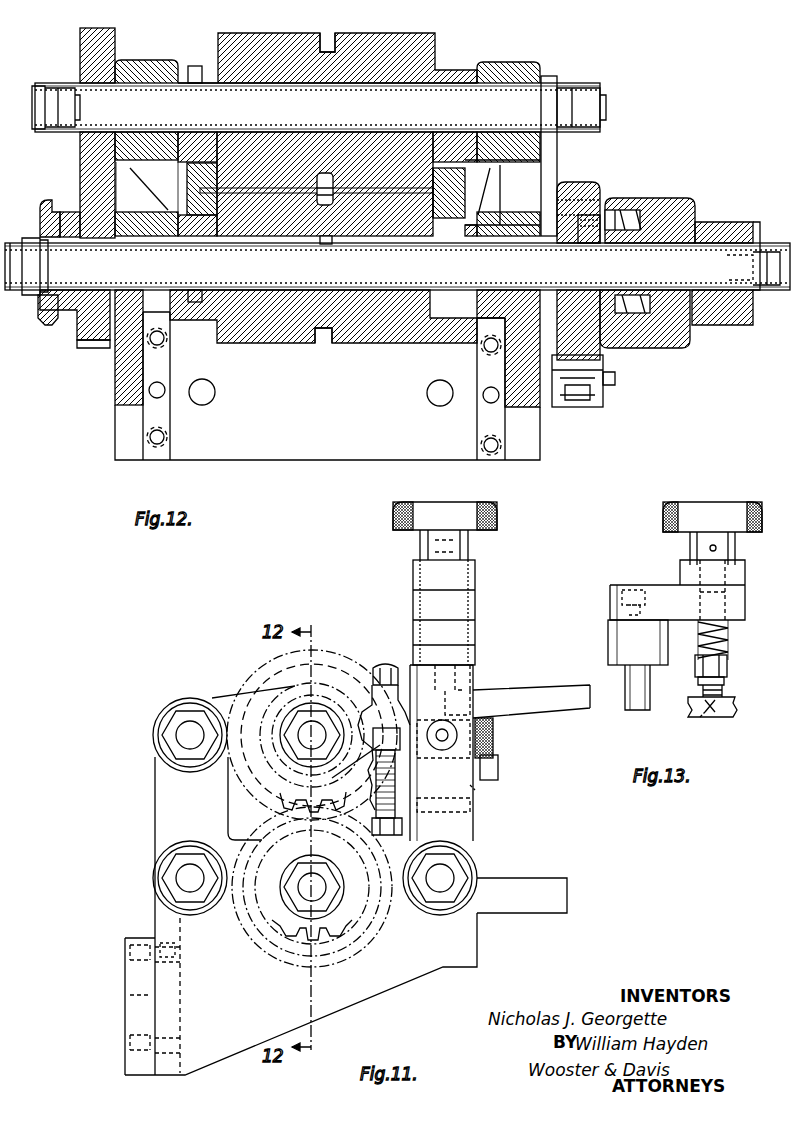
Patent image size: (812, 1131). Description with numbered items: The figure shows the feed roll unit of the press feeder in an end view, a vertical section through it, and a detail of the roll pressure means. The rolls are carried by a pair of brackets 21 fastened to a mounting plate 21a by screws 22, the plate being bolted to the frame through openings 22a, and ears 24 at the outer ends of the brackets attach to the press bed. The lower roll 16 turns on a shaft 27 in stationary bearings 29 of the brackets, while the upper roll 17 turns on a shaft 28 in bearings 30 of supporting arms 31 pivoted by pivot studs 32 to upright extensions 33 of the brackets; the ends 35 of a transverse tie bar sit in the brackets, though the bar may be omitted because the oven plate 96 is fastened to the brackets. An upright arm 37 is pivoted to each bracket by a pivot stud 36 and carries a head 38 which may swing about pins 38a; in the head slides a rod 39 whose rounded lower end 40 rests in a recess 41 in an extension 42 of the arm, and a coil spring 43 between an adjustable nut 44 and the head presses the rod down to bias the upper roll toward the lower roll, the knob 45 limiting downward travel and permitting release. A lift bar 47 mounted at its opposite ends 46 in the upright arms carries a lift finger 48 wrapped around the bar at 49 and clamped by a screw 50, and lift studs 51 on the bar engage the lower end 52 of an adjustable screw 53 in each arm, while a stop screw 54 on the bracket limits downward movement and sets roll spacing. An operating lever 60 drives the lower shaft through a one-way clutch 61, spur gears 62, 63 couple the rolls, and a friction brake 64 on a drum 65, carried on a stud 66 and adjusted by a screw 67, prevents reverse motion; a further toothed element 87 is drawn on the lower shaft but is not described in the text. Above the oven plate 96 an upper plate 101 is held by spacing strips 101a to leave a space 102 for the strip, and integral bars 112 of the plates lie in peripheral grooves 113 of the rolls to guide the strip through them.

In FIG. 12, the lower roll 16 is at (366, 335).
In FIG. 12, the upper roll 17 is at (378, 40).
In FIG. 11, the bracket 21 is at (380, 984).
In FIG. 12, the mounting plate 21a is at (330, 455).
In FIG. 11, the mounting plate 21a is at (130, 1008).
In FIG. 12, the screws 22 is at (484, 350).
In FIG. 11, the screws 22 is at (178, 948).
In FIG. 12, the openings 22a is at (214, 397).
In FIG. 11, the ears 24 is at (560, 878).
In FIG. 12, the shaft 27 is at (272, 318).
In FIG. 12, the shaft 28 is at (205, 83).
In FIG. 12, the stationary bearings 29 is at (200, 305).
In FIG. 12, the bearings 30 is at (148, 60).
In FIG. 11, the bearings 30 is at (333, 690).
In FIG. 11, the supporting arms 31 is at (227, 698).
In FIG. 11, the pivot studs 32 is at (180, 740).
In FIG. 11, the upright extensions 33 is at (155, 828).
In FIG. 11, the ends 35 is at (180, 880).
In FIG. 11, the pivot stud 36 is at (450, 875).
In FIG. 11, the upright arm 37 is at (460, 818).
In FIG. 13, the upright arm 37 is at (622, 705).
In FIG. 11, the head 38 is at (476, 602).
In FIG. 13, the head 38 is at (660, 592).
In FIG. 13, the pins 38a is at (630, 588).
In FIG. 11, the slidable rod 39 is at (478, 665).
In FIG. 13, the slidable rod 39 is at (735, 592).
In FIG. 11, the rounded lower end 40 is at (445, 705).
In FIG. 13, the rounded lower end 40 is at (722, 694).
In FIG. 13, the recess 41 is at (703, 718).
In FIG. 11, the extension 42 is at (480, 680).
In FIG. 13, the extension 42 is at (732, 712).
In FIG. 13, the coil spring 43 is at (728, 636).
In FIG. 13, the adjustable nut 44 is at (695, 670).
In FIG. 11, the knob 45 is at (497, 515).
In FIG. 13, the knob 45 is at (708, 502).
In FIG. 11, the opposite ends 46 is at (458, 740).
In FIG. 11, the lift bar 47 is at (498, 765).
In FIG. 11, the lift finger 48 is at (550, 696).
In FIG. 11, the wrap 49 is at (478, 788).
In FIG. 11, the screw 50 is at (495, 728).
In FIG. 11, the lift studs 51 is at (351, 765).
In FIG. 11, the lower end 52 is at (398, 712).
In FIG. 11, the adjustable screw 53 is at (380, 663).
In FIG. 11, the stop screw 54 is at (400, 780).
In FIG. 12, the operating lever 60 is at (726, 222).
In FIG. 12, the one-way clutch 61 is at (650, 200).
In FIG. 12, the spur gear 62 is at (75, 332).
In FIG. 11, the spur gear 62 is at (278, 958).
In FIG. 12, the spur gear 63 is at (80, 58).
In FIG. 11, the spur gear 63 is at (262, 693).
In FIG. 12, the friction brake 64 is at (585, 182).
In FIG. 12, the drum 65 is at (602, 218).
In FIG. 12, the stud 66 is at (560, 400).
In FIG. 12, the adjusting screw 67 is at (580, 392).
In FIG. 12, the pinion 87 is at (40, 298).
In FIG. 11, the pinion 87 is at (332, 940).
In FIG. 12, the oven plate 96 is at (460, 198).
In FIG. 12, the plate 101 is at (466, 182).
In FIG. 12, the spacing strips 101a is at (186, 178).
In FIG. 12, the space 102 is at (262, 238).
In FIG. 12, the integral bar 112 is at (326, 173).
In FIG. 12, the peripheral grooves 113 is at (327, 34).